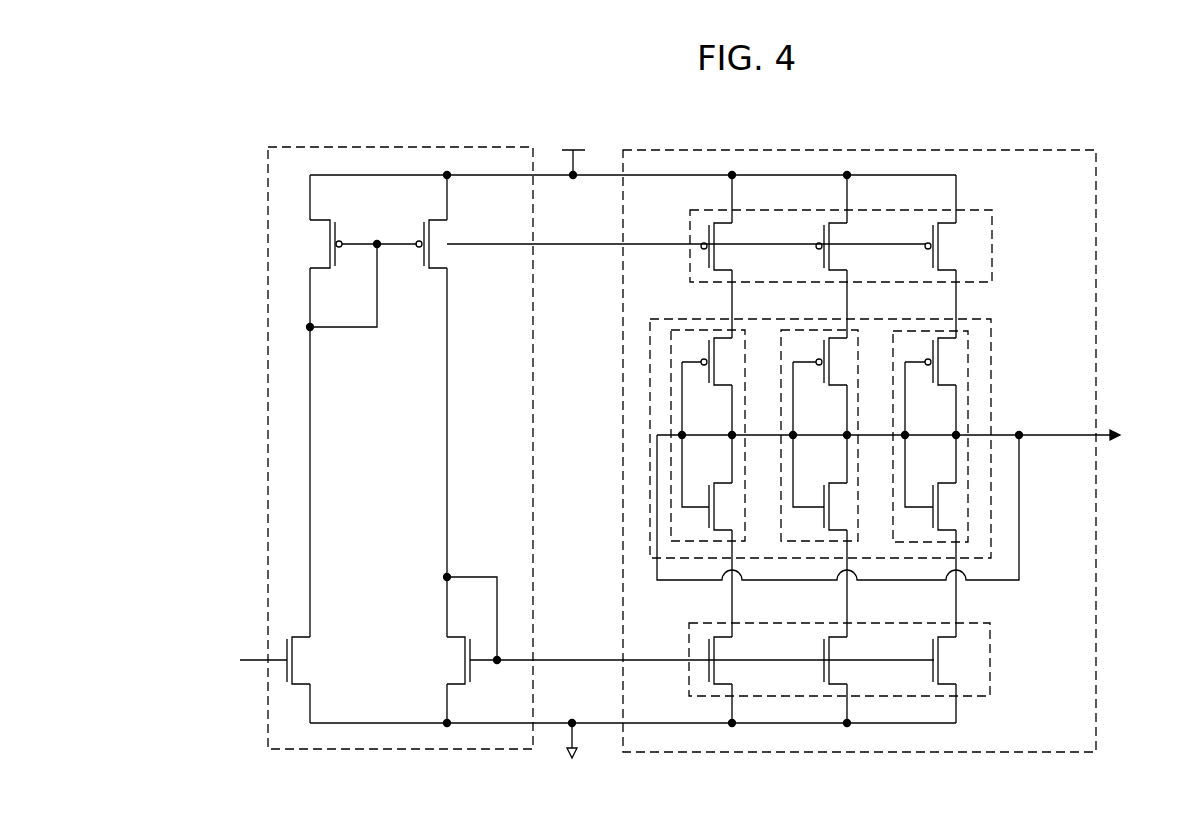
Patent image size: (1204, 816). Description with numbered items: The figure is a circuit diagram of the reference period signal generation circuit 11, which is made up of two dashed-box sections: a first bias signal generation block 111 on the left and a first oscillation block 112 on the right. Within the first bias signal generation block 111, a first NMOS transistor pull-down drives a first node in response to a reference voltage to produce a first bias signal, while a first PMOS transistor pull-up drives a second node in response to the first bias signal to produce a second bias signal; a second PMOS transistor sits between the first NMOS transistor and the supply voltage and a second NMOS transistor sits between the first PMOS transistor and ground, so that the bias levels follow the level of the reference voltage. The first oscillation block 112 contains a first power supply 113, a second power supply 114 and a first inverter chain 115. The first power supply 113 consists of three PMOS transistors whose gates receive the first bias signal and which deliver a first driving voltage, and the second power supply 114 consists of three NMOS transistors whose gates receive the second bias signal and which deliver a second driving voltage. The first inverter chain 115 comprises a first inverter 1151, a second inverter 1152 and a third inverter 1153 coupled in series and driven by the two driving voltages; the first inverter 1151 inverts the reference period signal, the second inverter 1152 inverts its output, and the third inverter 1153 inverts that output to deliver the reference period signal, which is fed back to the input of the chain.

The reference period signal generation circuit 11 is at (311, 101).
The first bias signal generation block 111 is at (467, 147).
The first oscillation block 112 is at (1030, 150).
The first power supply 113 is at (992, 247).
The second power supply 114 is at (992, 662).
The first inverter chain 115 is at (992, 336).
The first inverter 1151 is at (685, 327).
The second inverter 1152 is at (858, 400).
The third inverter 1153 is at (968, 371).